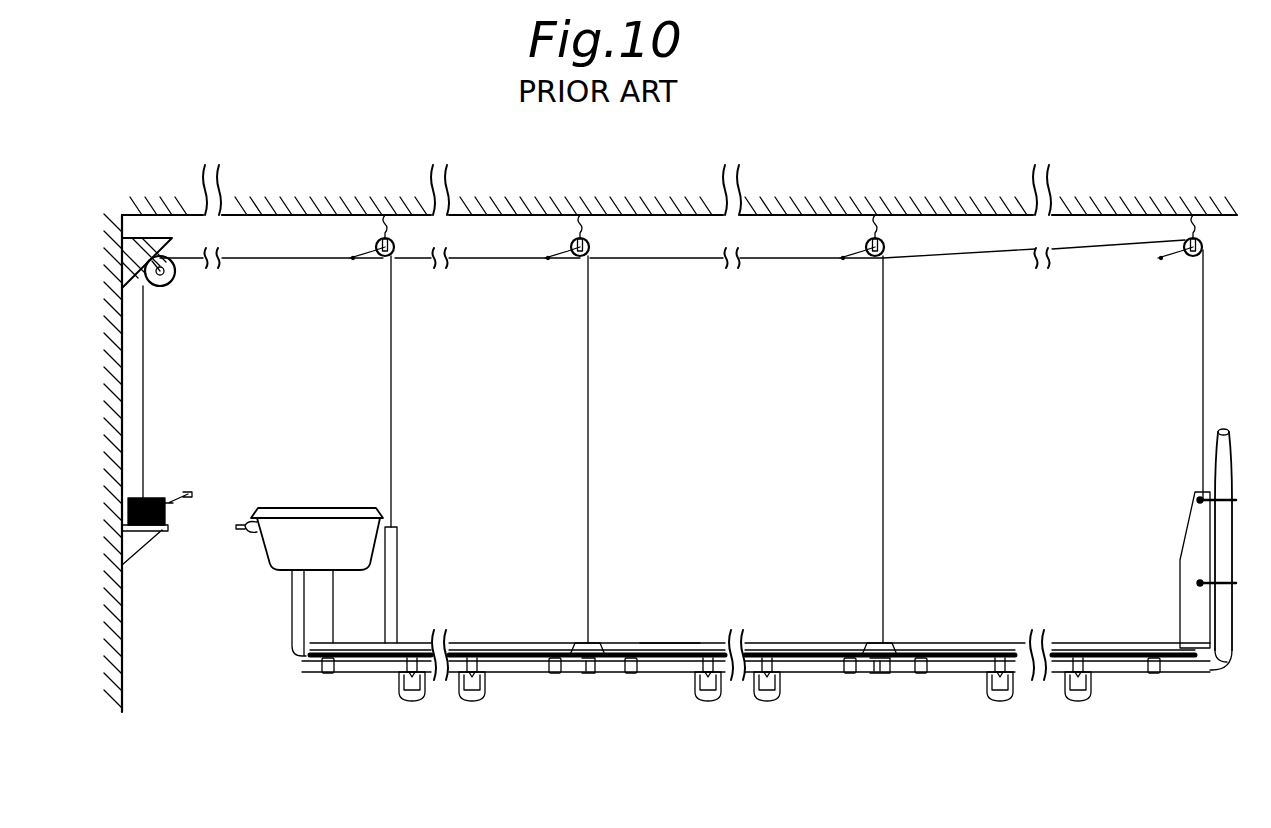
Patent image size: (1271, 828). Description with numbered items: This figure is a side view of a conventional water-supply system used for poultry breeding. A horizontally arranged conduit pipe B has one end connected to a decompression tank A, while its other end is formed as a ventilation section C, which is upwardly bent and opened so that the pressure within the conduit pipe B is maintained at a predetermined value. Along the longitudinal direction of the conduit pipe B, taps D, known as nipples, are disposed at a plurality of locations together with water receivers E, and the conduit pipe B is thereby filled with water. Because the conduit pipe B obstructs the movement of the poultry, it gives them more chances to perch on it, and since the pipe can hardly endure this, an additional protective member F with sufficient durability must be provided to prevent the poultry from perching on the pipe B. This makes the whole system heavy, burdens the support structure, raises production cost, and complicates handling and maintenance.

The decompression tank A is at (318, 522).
The conduit pipe B is at (820, 668).
The ventilation section C is at (1227, 452).
The tap D is at (397, 684).
The water receiver E is at (410, 700).
The protective member F is at (676, 648).